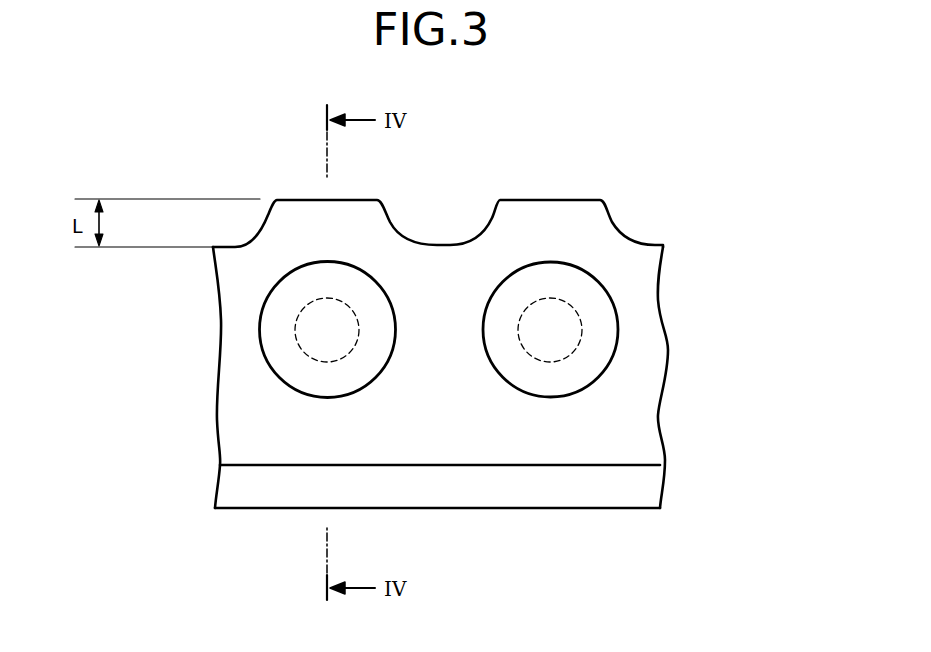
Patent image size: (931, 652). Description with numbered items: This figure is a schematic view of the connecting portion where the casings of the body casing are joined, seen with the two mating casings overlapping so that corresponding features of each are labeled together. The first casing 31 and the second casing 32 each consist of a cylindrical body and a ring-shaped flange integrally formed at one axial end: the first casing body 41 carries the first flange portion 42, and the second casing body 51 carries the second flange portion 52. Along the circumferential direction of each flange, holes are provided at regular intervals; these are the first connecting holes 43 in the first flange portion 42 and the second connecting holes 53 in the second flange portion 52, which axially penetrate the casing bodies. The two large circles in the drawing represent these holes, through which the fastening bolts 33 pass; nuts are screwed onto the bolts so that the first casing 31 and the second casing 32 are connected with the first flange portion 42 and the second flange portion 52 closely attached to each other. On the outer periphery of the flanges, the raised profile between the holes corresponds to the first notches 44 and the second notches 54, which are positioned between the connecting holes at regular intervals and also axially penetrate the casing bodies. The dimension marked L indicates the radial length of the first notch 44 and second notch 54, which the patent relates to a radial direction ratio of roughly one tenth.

The first casing 31 is at (435, 359).
The second casing 32 is at (435, 359).
The fastening bolt 33 is at (280, 335).
The first casing body 41 is at (518, 483).
The second casing body 51 is at (440, 524).
The first flange portion 42 is at (307, 418).
The second flange portion 52 is at (361, 356).
The first connecting hole 43 is at (325, 311).
The second connecting hole 53 is at (435, 330).
The first notch 44 is at (253, 230).
The second notch 54 is at (444, 191).